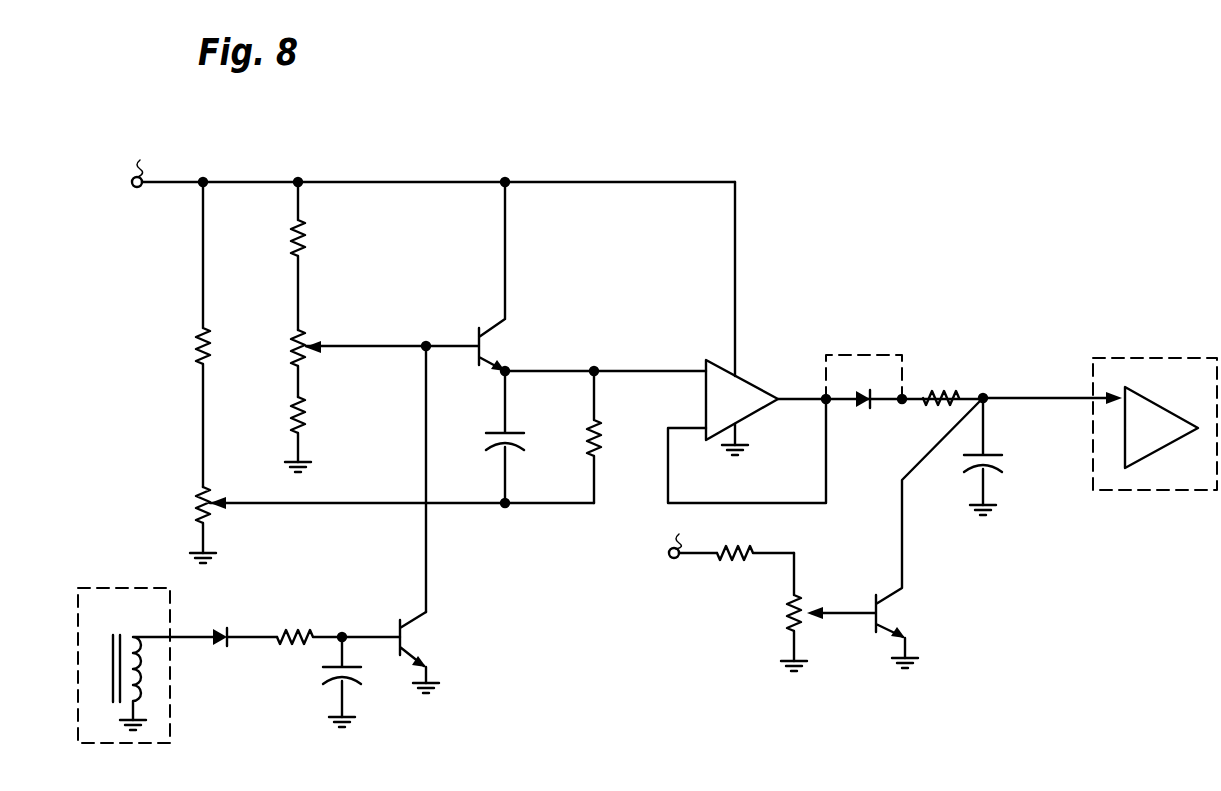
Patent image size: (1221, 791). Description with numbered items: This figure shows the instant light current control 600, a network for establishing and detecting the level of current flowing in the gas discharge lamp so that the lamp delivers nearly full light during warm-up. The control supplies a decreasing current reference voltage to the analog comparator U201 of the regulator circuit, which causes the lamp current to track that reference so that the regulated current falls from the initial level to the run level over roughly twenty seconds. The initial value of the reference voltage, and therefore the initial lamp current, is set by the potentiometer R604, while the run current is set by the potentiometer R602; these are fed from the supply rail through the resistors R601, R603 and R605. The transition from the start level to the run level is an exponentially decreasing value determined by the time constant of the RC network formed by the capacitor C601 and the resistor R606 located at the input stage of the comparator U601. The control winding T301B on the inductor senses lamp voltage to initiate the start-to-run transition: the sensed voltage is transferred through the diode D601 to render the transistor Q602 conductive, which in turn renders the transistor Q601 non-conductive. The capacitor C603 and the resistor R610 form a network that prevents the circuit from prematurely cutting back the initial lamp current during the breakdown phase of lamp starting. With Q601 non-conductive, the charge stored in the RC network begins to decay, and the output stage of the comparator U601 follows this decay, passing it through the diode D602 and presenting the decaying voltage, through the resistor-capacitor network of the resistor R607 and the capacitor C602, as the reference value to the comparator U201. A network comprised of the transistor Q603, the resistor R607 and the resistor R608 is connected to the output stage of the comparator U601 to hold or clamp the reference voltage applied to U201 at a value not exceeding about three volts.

The instant light current control 600 is at (814, 123).
The resistor R601 is at (193, 346).
The potentiometer R602 is at (194, 508).
The resistor R603 is at (305, 240).
The potentiometer R604 is at (290, 350).
The resistor R605 is at (305, 412).
The resistor R606 is at (589, 452).
The resistor R607 is at (942, 388).
The resistor R608 is at (730, 560).
The resistor R610 is at (314, 616).
The capacitor C601 is at (481, 434).
The capacitor C602 is at (1004, 462).
The capacitor C603 is at (328, 675).
The diode D601 is at (225, 613).
The diode D602 is at (866, 406).
The transistor Q601 is at (492, 339).
The transistor Q602 is at (412, 640).
The transistor Q603 is at (890, 612).
The comparator U601 is at (825, 342).
The analog comparator U201 is at (1155, 424).
The control winding on inductor T301B is at (145, 665).